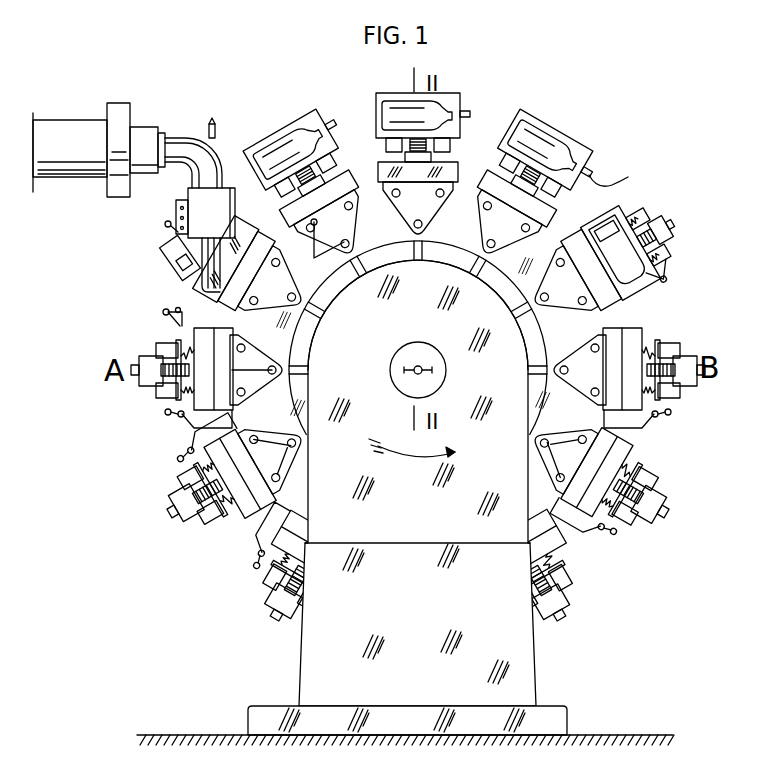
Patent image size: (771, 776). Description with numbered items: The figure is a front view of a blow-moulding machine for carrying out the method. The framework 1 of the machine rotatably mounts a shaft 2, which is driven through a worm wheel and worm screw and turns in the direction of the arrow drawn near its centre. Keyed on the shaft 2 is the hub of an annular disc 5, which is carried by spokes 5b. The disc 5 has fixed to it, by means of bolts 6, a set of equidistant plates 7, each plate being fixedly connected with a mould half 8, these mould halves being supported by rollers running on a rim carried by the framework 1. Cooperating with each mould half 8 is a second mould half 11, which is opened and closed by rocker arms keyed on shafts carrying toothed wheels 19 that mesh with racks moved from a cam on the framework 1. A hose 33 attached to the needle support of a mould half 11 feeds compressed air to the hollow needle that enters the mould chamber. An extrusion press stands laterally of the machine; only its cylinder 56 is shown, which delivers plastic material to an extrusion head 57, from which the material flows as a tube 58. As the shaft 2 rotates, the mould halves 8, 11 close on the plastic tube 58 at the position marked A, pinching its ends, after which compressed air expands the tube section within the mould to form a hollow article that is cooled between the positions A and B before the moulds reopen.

The framework 1 is at (318, 661).
The shaft 2 is at (427, 359).
The annular disc 5 is at (293, 244).
The spokes 5b is at (326, 311).
The bolts 6 is at (319, 253).
The plates 7 is at (344, 221).
The mould half 8 is at (453, 173).
The mould half 11 is at (456, 108).
The toothed wheel 19 is at (165, 379).
The hose 33 is at (608, 177).
The cylinder 56 is at (81, 132).
The extrusion head 57 is at (223, 222).
The tube 58 is at (192, 284).